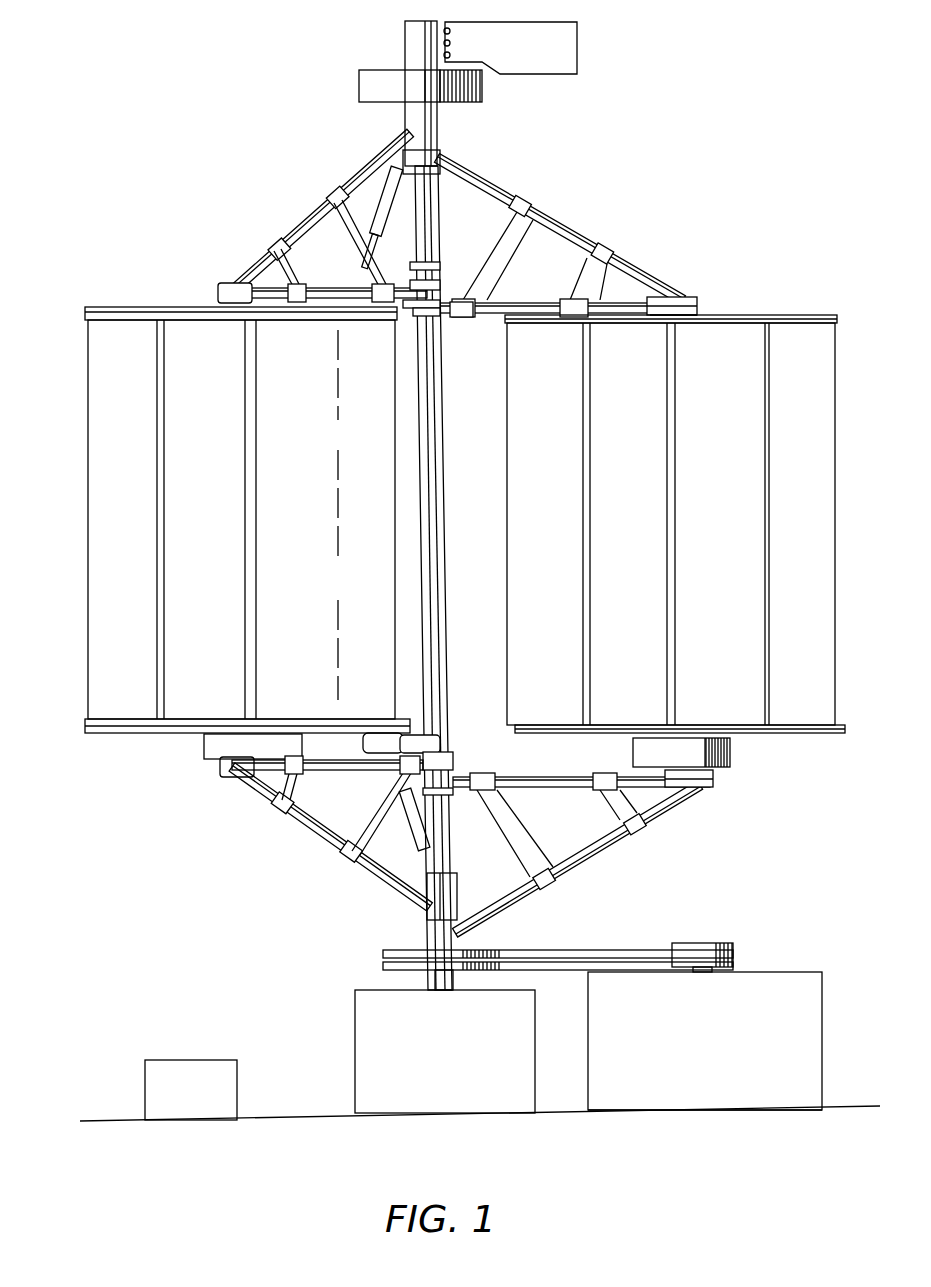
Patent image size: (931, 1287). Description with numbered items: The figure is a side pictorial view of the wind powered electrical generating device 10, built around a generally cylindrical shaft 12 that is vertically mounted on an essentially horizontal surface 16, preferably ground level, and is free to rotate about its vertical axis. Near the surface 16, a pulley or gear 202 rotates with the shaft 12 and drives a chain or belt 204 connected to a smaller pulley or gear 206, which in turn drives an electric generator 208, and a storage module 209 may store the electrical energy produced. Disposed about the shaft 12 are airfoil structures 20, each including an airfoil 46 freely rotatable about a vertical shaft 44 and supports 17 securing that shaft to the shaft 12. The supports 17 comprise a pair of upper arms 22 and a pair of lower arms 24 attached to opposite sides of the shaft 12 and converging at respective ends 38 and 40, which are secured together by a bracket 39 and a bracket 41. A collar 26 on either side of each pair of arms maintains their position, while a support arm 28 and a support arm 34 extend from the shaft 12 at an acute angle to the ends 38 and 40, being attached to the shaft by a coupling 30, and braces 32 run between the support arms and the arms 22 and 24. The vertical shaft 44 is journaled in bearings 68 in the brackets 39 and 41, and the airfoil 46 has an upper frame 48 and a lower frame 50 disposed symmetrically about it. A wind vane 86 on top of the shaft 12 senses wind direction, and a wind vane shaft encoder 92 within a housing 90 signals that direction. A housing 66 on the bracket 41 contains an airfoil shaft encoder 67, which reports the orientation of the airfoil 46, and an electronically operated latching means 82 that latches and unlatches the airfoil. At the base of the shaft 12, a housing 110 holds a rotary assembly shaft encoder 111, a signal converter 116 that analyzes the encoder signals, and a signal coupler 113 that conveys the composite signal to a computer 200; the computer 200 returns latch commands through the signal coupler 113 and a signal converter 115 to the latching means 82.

The wind powered electrical generating device 10 is at (226, 247).
The shaft 12 is at (433, 437).
The horizontal surface 16 is at (461, 1163).
The supports 17 is at (483, 222).
The airfoil structure 20 is at (481, 510).
The upper arms 22 is at (507, 303).
The lower arms 24 is at (520, 780).
The collar 26 is at (450, 293).
The support arm 28 is at (567, 228).
The coupling 30 is at (438, 135).
The braces 32 is at (366, 253).
The support arm 34 is at (513, 897).
The end 38 is at (665, 285).
The bracket 39 is at (690, 297).
The end 40 is at (700, 792).
The bracket 41 is at (715, 778).
The vertical shaft 44 is at (248, 497).
The airfoil 46 is at (216, 558).
The upper frame 48 is at (802, 315).
The lower frame 50 is at (825, 733).
The housing 66 is at (732, 748).
The airfoil shaft encoder 67 is at (732, 757).
The bearings 68 is at (218, 293).
The latching means 82 is at (640, 752).
The wind vane 86 is at (558, 40).
The housing 90 is at (359, 90).
The wind vane shaft encoder 92 is at (482, 90).
The housing 110 is at (470, 1051).
The rotary assembly shaft encoder 111 is at (355, 1025).
The signal coupler 113 is at (362, 1072).
The signal converter 115 is at (362, 1092).
The signal converter 116 is at (355, 1048).
The computer 200 is at (212, 1108).
The pulley or gear 202 is at (410, 950).
The chain or belt 204 is at (545, 955).
The pulley or gear 206 is at (690, 943).
The electric generator 208 is at (793, 1003).
The storage module 209 is at (800, 1043).